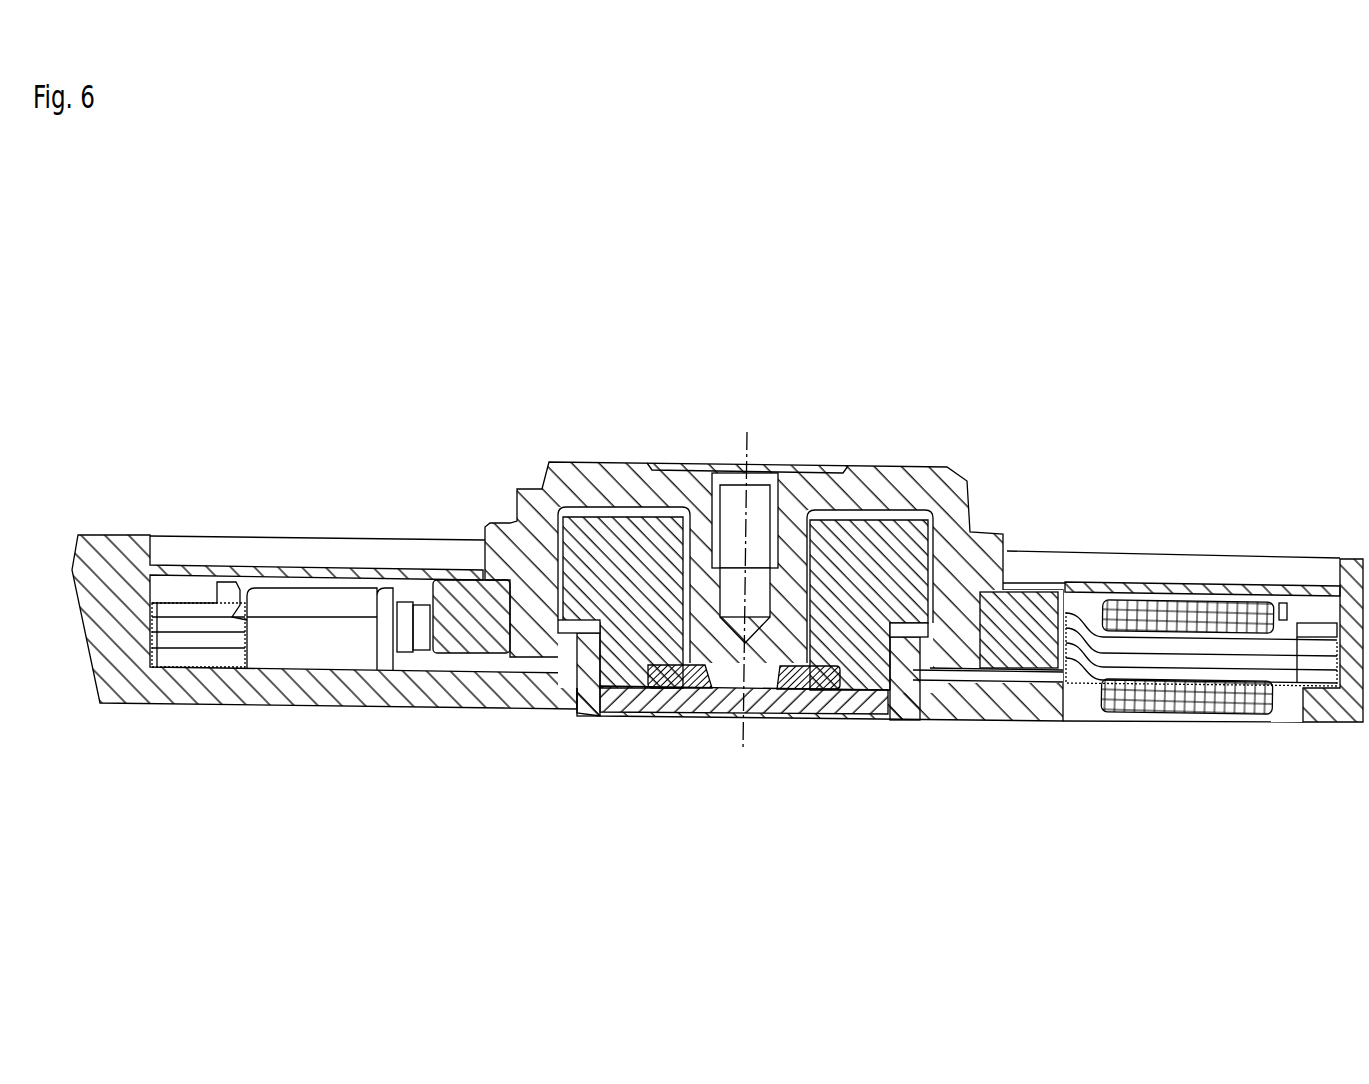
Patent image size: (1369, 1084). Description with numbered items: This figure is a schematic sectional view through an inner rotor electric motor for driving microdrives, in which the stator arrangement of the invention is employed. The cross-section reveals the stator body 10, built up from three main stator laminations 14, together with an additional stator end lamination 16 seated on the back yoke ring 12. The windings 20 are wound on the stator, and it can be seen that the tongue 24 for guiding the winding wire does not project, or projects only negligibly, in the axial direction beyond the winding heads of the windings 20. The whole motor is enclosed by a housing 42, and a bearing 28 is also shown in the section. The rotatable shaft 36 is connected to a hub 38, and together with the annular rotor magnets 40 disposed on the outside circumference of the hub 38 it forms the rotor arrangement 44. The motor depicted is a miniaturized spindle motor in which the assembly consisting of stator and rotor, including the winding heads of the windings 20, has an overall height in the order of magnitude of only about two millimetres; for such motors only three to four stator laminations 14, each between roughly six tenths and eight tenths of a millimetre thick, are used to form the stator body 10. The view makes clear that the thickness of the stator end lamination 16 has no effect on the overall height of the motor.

The stator body 10 is at (300, 647).
The back yoke ring 12 is at (176, 645).
The stator laminations 14 is at (1083, 640).
The stator end lamination 16 is at (182, 612).
The windings 20 is at (1180, 700).
The tongue 24 is at (228, 597).
The bearing 28 is at (677, 567).
The shaft 36 is at (787, 573).
The hub 38 is at (890, 493).
The rotor magnets 40 is at (1010, 632).
The housing 42 is at (378, 690).
The rotor arrangement 44 is at (578, 487).